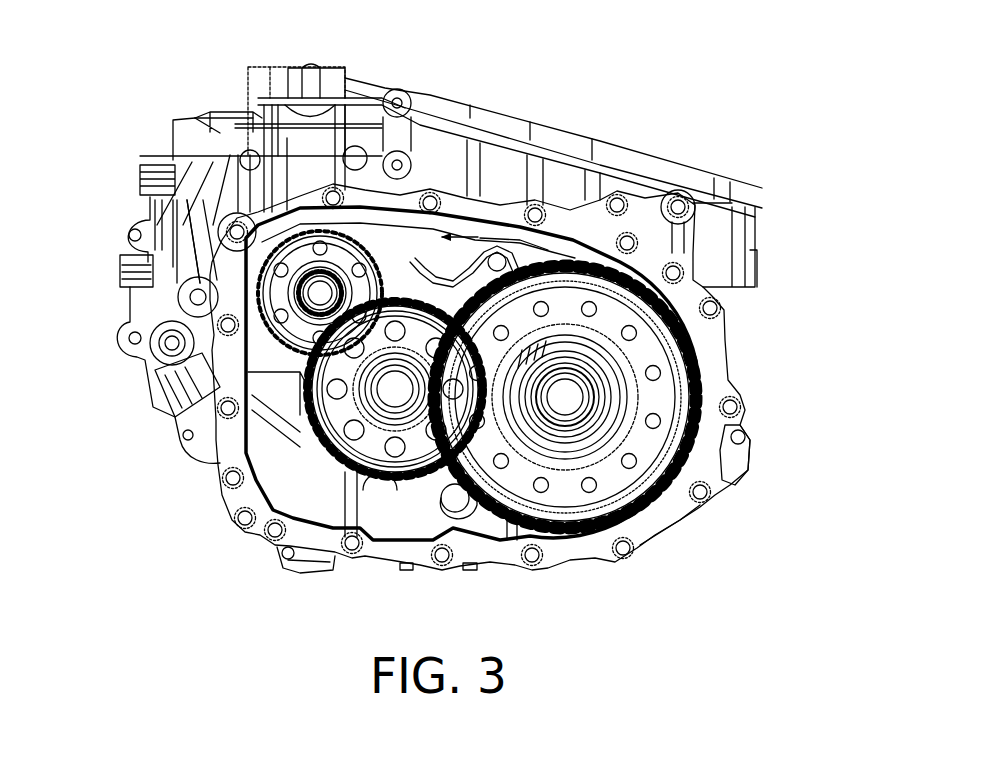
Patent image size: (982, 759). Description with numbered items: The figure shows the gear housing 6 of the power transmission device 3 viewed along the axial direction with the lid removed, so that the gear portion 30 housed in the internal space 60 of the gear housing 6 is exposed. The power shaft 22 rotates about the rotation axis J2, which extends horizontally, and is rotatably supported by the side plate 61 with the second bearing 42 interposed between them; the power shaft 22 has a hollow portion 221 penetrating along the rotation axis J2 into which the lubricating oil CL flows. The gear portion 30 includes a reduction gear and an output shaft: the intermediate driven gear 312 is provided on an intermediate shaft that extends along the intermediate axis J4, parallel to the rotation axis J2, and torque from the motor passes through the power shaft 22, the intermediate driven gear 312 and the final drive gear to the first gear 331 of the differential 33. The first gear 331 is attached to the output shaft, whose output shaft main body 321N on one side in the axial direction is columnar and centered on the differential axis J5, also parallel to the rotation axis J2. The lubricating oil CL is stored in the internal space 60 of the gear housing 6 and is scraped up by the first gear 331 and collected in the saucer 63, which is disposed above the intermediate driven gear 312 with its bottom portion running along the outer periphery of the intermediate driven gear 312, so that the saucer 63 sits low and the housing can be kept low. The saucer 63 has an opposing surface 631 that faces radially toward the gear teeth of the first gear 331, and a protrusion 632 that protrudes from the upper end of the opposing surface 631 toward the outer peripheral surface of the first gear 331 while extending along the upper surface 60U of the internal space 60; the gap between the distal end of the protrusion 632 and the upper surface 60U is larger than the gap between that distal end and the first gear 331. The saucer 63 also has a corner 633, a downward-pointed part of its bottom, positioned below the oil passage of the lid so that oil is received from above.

The power transmission device 3 is at (143, 420).
The gear housing 6 is at (737, 355).
The power shaft 22 is at (240, 252).
The hollow portion 221 is at (170, 319).
The gear portion 30 is at (295, 450).
The intermediate driven gear 312 is at (390, 470).
The output shaft main body 321N is at (623, 398).
The differential 33 is at (640, 418).
The first gear 331 is at (637, 488).
The second bearing 42 is at (265, 225).
The internal space 60 is at (404, 242).
The upper surface 60U is at (480, 230).
The side plate 61 is at (422, 270).
The saucer 63 is at (437, 215).
The opposing surface 631 is at (543, 253).
The protrusion 632 is at (505, 255).
The corner 633 is at (460, 283).
The lubricating oil CL is at (517, 262).
The rotation axis J2 is at (273, 280).
The intermediate axis J4 is at (395, 389).
The differential axis J5 is at (566, 420).